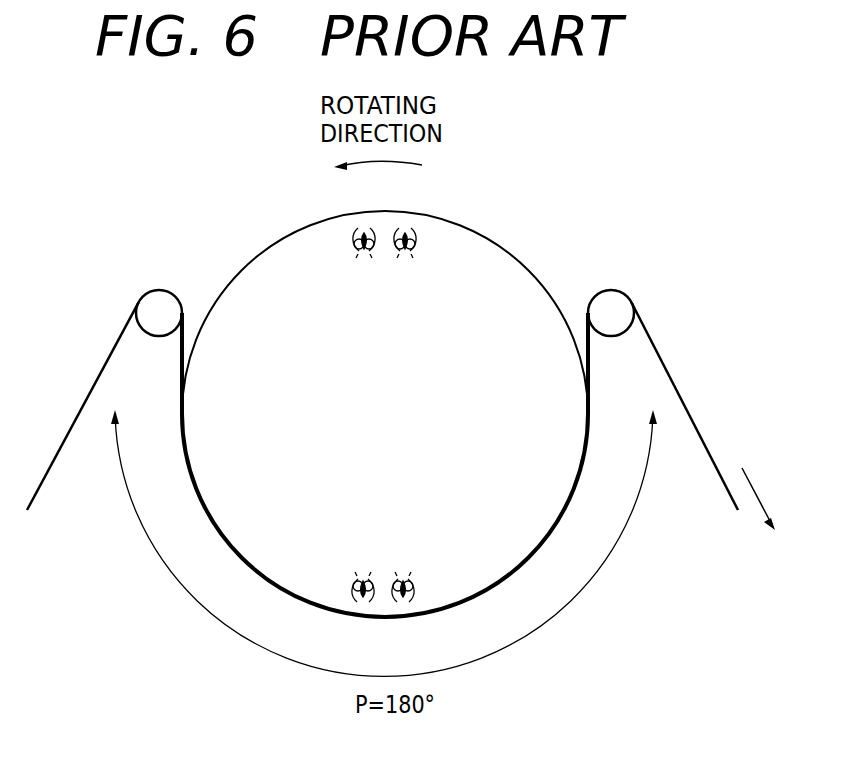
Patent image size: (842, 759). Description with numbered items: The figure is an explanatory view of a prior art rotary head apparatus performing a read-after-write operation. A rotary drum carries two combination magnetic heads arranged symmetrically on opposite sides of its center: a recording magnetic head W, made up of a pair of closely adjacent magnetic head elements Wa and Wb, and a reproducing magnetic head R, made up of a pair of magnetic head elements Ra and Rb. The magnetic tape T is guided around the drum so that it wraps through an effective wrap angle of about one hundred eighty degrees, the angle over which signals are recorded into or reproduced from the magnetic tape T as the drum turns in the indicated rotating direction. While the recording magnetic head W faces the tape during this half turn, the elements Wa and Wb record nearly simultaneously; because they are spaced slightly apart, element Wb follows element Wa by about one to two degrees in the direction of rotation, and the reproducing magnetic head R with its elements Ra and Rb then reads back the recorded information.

The reproducing magnetic head R is at (379, 250).
The magnetic head element Ra is at (366, 258).
The magnetic head element Rb is at (407, 258).
The recording magnetic head W is at (392, 590).
The magnetic head element Wa is at (412, 572).
The magnetic head element Wb is at (358, 572).
The magnetic tape T is at (683, 398).